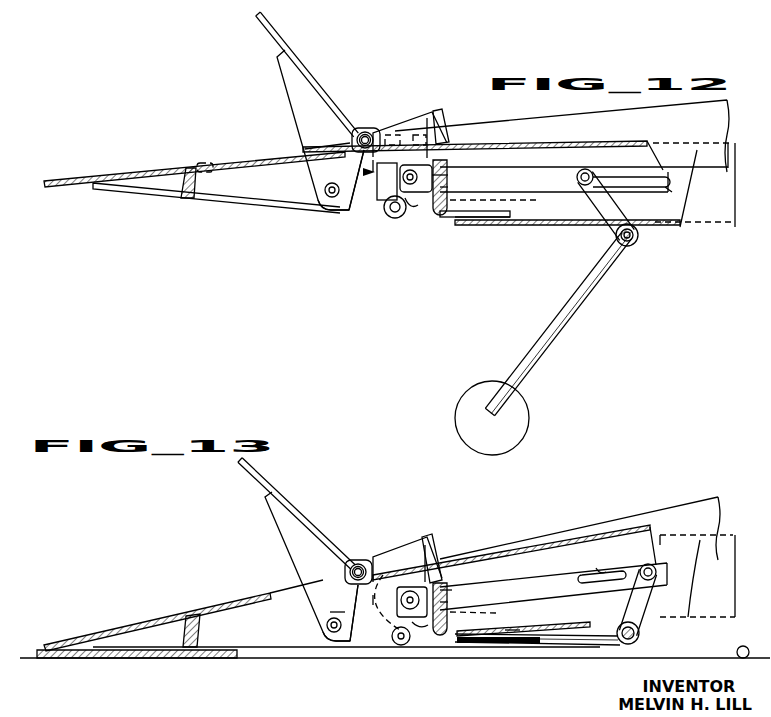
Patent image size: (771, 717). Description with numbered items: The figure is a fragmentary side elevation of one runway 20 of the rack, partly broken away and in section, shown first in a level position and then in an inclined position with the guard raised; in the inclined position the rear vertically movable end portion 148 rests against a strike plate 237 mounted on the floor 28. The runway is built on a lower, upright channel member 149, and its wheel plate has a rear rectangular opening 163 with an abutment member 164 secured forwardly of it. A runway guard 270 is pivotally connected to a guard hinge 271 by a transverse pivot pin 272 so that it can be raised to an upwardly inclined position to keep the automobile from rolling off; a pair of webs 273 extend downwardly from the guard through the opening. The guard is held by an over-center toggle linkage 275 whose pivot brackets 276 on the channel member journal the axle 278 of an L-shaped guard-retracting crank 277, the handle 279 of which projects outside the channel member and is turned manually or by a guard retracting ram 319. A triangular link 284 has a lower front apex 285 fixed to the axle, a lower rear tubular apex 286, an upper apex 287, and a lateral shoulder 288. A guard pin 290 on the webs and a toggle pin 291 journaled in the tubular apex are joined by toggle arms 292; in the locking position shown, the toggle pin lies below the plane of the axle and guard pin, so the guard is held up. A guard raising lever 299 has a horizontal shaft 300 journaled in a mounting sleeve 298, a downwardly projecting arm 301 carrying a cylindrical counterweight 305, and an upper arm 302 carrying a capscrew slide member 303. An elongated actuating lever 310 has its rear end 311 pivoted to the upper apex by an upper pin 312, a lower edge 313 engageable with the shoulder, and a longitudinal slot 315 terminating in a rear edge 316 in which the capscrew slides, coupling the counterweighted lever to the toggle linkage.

In FIG. 12, the runway 20 is at (612, 140).
In FIG. 13, the runway 20 is at (548, 542).
In FIG. 13, the floor 28 is at (395, 660).
In FIG. 12, the rear vertically movable end portion 148 is at (110, 172).
In FIG. 13, the rear vertically movable end portion 148 is at (123, 623).
In FIG. 12, the channel member 149 is at (735, 228).
In FIG. 13, the channel member 149 is at (740, 598).
In FIG. 12, the opening 163 is at (198, 165).
In FIG. 13, the opening 163 is at (205, 613).
In FIG. 12, the abutment member 164 is at (398, 126).
In FIG. 13, the abutment member 164 is at (388, 556).
In FIG. 13, the strike plate 237 is at (92, 660).
In FIG. 12, the runway guard 270 is at (282, 36).
In FIG. 13, the runway guard 270 is at (270, 474).
In FIG. 12, the guard hinge 271 is at (369, 130).
In FIG. 13, the guard hinge 271 is at (364, 565).
In FIG. 12, the pivot pin 272 is at (371, 132).
In FIG. 13, the pivot pin 272 is at (350, 573).
In FIG. 12, the web 273 is at (284, 88).
In FIG. 13, the web 273 is at (280, 519).
In FIG. 12, the over-center toggle linkage 275 is at (356, 216).
In FIG. 13, the over-center toggle linkage 275 is at (358, 648).
In FIG. 12, the pivot bracket 276 is at (512, 224).
In FIG. 13, the pivot bracket 276 is at (512, 640).
In FIG. 12, the guard-retracting crank 277 is at (448, 187).
In FIG. 13, the guard-retracting crank 277 is at (447, 590).
In FIG. 12, the axle 278 is at (450, 200).
In FIG. 13, the axle 278 is at (489, 612).
In FIG. 12, the handle 279 is at (448, 175).
In FIG. 13, the handle 279 is at (447, 602).
In FIG. 12, the triangular link 284 is at (448, 140).
In FIG. 13, the triangular link 284 is at (428, 648).
In FIG. 12, the lower front apex 285 is at (463, 226).
In FIG. 12, the lower rear tubular apex 286 is at (377, 222).
In FIG. 13, the lower rear tubular apex 286 is at (377, 652).
In FIG. 12, the upper apex 287 is at (372, 166).
In FIG. 13, the upper apex 287 is at (372, 600).
In FIG. 12, the lateral shoulder 288 is at (430, 217).
In FIG. 13, the lateral shoulder 288 is at (437, 640).
In FIG. 12, the guard pin 290 is at (325, 190).
In FIG. 13, the guard pin 290 is at (325, 625).
In FIG. 12, the toggle pin 291 is at (403, 218).
In FIG. 13, the toggle pin 291 is at (403, 647).
In FIG. 12, the toggle arm 292 is at (340, 211).
In FIG. 13, the toggle arm 292 is at (352, 650).
In FIG. 12, the mounting sleeve 298 is at (634, 247).
In FIG. 12, the guard raising lever 299 is at (567, 326).
In FIG. 13, the guard raising lever 299 is at (590, 646).
In FIG. 12, the horizontal shaft 300 is at (640, 238).
In FIG. 13, the horizontal shaft 300 is at (645, 631).
In FIG. 12, the arm 301 is at (550, 342).
In FIG. 13, the arm 301 is at (602, 644).
In FIG. 12, the upper arm 302 is at (600, 207).
In FIG. 13, the upper arm 302 is at (630, 607).
In FIG. 12, the capscrew slide member 303 is at (590, 170).
In FIG. 13, the capscrew slide member 303 is at (662, 562).
In FIG. 12, the cylindrical counterweight 305 is at (518, 408).
In FIG. 13, the cylindrical counterweight 305 is at (330, 612).
In FIG. 12, the actuating lever 310 is at (522, 189).
In FIG. 13, the actuating lever 310 is at (518, 592).
In FIG. 12, the rear end 311 is at (427, 158).
In FIG. 13, the rear end 311 is at (425, 582).
In FIG. 12, the upper pin 312 is at (445, 166).
In FIG. 13, the upper pin 312 is at (418, 598).
In FIG. 12, the lower edge 313 is at (420, 205).
In FIG. 13, the lower edge 313 is at (425, 645).
In FIG. 12, the slot 315 is at (673, 188).
In FIG. 13, the slot 315 is at (618, 558).
In FIG. 13, the rear edge 316 is at (594, 566).
In FIG. 12, the guard retracting ram 319 is at (363, 172).